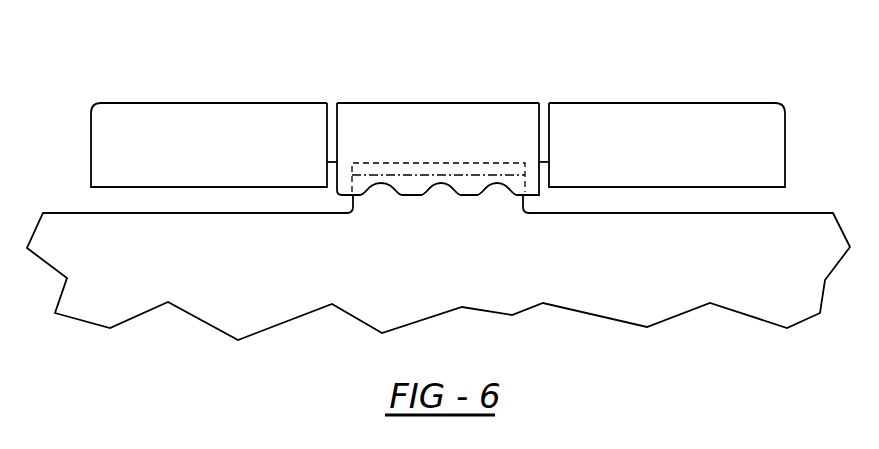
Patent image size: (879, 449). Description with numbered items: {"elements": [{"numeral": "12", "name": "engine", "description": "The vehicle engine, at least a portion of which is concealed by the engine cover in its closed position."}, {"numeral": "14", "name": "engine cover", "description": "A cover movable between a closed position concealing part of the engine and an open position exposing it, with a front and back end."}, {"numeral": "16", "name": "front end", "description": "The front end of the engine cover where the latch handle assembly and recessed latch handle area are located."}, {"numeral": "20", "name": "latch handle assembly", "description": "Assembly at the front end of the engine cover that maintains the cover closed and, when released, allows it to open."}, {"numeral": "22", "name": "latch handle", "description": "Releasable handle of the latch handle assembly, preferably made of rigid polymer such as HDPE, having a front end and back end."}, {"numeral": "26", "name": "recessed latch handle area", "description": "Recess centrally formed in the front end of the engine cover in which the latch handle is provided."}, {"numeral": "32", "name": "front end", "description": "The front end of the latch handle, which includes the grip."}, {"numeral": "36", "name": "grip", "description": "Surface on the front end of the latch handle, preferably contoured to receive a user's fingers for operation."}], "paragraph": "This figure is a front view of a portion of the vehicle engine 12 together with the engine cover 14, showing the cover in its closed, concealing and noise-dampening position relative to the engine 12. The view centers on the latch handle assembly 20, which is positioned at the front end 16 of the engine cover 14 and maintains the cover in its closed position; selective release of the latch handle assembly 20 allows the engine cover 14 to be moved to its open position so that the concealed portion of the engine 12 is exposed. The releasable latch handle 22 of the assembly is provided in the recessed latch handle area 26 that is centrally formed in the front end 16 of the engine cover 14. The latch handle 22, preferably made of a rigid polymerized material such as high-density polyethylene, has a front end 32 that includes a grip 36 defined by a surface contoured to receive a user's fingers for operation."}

The base 12 is at (616, 286).
The second housing portion 14 is at (643, 130).
The first housing portion 16 is at (190, 127).
The first wall 20 is at (363, 120).
The cavity 22 is at (410, 118).
The second wall 26 is at (541, 128).
The component 32 is at (450, 117).
The contact bumps 36 is at (432, 184).